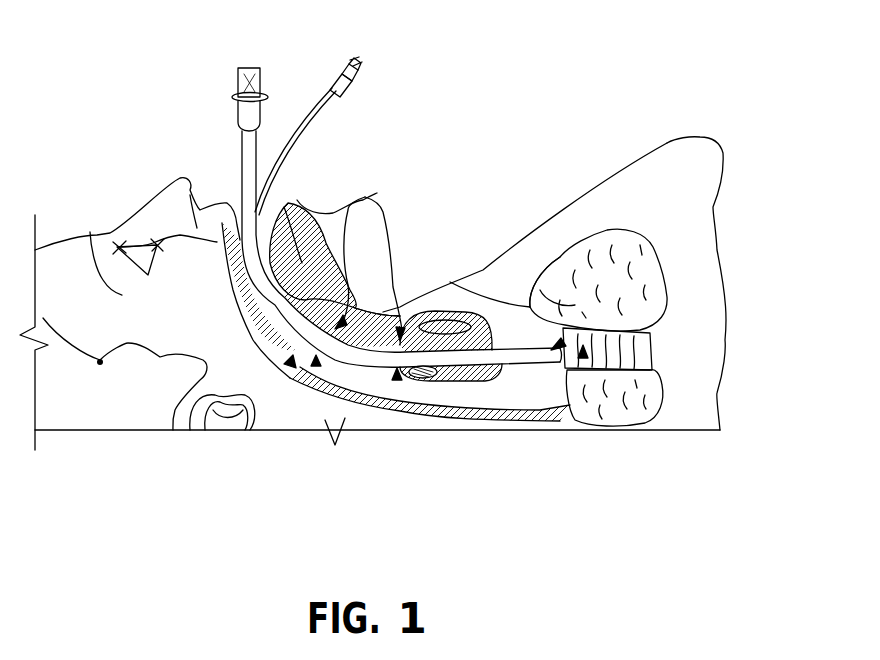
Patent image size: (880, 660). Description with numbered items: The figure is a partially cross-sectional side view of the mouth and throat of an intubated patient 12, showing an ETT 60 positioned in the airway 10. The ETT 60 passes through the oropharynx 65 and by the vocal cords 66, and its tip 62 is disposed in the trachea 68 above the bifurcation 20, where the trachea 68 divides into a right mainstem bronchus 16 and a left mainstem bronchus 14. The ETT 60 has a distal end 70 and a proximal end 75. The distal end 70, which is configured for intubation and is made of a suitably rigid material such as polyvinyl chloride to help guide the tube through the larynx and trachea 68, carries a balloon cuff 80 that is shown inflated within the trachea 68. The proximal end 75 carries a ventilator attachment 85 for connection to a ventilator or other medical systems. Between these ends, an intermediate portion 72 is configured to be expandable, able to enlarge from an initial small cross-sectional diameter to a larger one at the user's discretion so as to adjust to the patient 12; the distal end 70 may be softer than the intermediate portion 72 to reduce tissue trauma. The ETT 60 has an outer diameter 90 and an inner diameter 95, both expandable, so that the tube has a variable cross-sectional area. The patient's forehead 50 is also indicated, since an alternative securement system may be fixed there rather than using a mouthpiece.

The airway 10 is at (262, 216).
The patient 12 is at (663, 140).
The left mainstem bronchus 14 is at (560, 338).
The right mainstem bronchus 16 is at (647, 405).
The bifurcation 20 is at (582, 352).
The forehead 50 is at (36, 251).
The ETT 60 is at (241, 143).
The tip 62 is at (490, 338).
The oropharynx 65 is at (290, 362).
The vocal cords 66 is at (395, 293).
The trachea 68 is at (655, 298).
The distal end 70 is at (507, 352).
The intermediate portion 72 is at (358, 210).
The proximal end 75 is at (266, 68).
The balloon cuff 80 is at (473, 315).
The ventilator attachment 85 is at (237, 80).
The outer diameter 90 is at (318, 362).
The inner diameter 95 is at (394, 378).